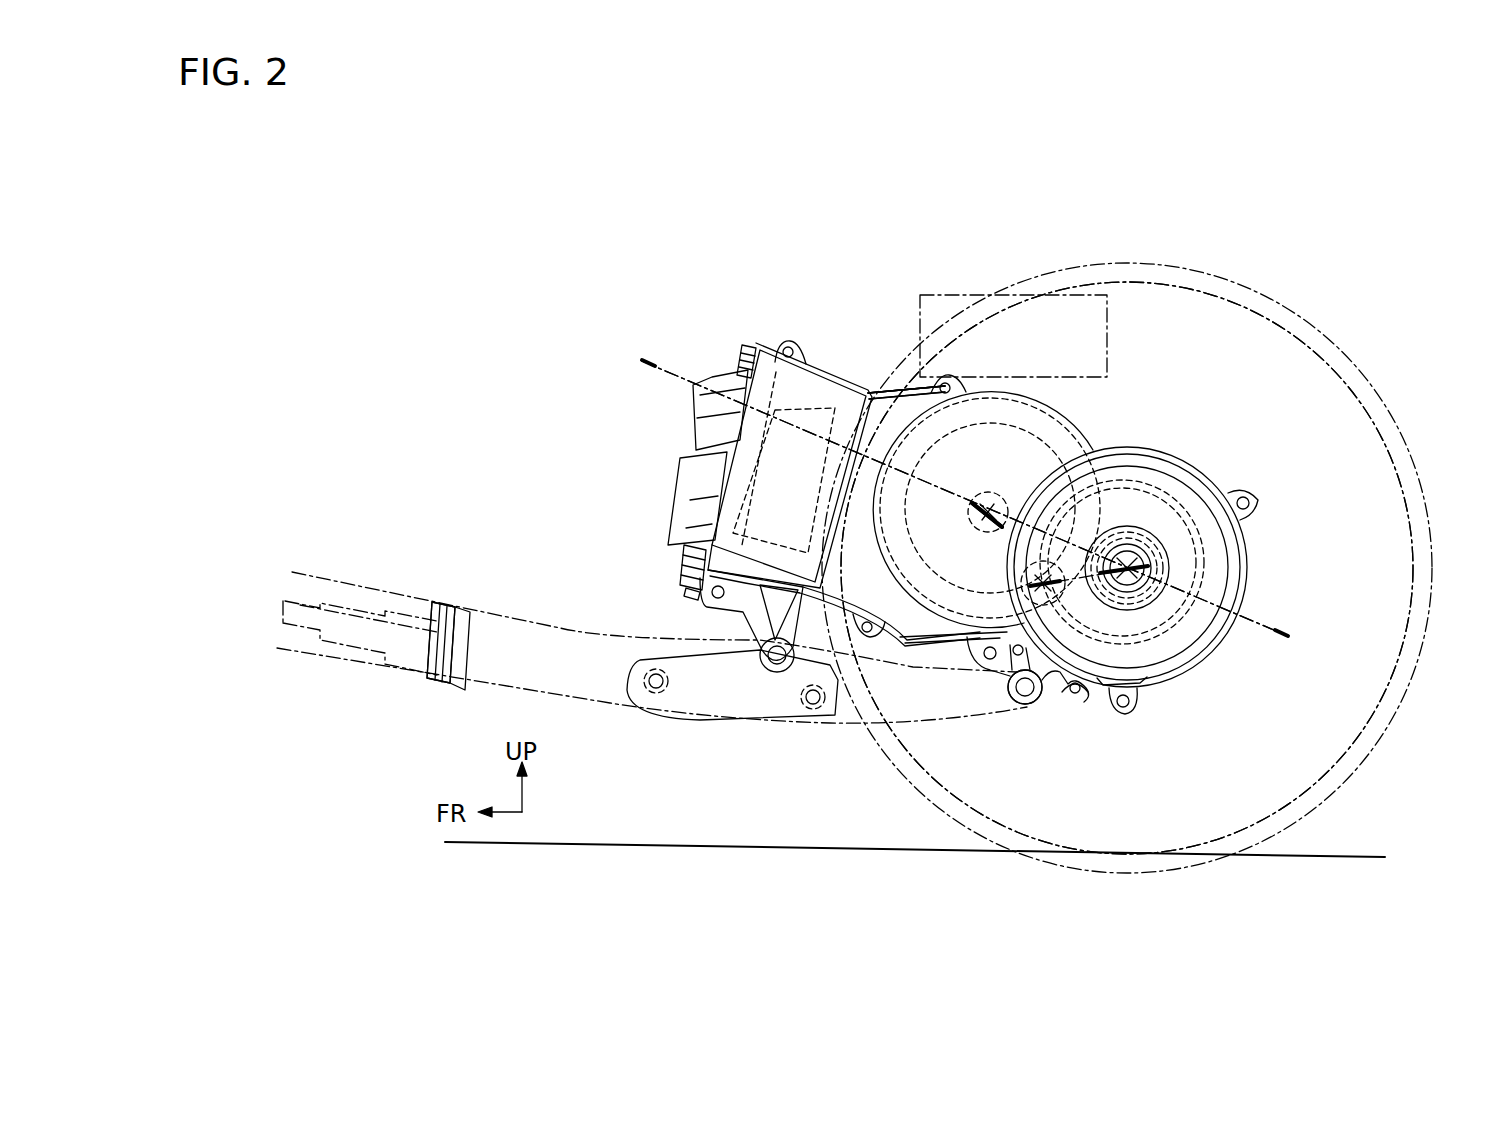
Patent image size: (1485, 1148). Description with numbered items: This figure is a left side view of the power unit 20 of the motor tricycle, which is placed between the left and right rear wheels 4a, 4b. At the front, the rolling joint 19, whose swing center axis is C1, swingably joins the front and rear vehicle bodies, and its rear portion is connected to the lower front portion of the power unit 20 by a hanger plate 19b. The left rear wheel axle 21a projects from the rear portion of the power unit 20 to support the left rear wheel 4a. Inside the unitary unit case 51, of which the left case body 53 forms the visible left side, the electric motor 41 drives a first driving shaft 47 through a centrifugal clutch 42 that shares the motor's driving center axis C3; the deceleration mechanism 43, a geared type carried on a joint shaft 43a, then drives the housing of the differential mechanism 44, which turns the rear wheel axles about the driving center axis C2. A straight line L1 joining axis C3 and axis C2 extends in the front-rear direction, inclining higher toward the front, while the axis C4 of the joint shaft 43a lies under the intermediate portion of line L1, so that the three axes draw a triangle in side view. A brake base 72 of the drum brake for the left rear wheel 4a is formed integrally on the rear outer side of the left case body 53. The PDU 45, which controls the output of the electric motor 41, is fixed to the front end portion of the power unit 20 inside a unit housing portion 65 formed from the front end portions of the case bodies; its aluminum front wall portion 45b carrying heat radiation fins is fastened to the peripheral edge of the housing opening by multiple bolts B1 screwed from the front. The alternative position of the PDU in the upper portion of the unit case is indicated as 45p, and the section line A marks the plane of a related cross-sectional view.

The left rear wheel 4a is at (1312, 360).
The right rear wheel 4b is at (1127, 568).
The rolling joint 19 is at (540, 637).
The hanger plate 19b is at (843, 730).
The power unit 20 is at (865, 313).
The left rear wheel axle 21a is at (1128, 572).
The electric motor 41 is at (1010, 392).
The centrifugal clutch 42 is at (1052, 422).
The deceleration mechanism 43 is at (1025, 687).
The joint shaft 43a is at (1045, 700).
The differential mechanism 44 is at (1140, 482).
The PDU (Power Drive Unit) 45 is at (782, 377).
The PDU as placed in the upper portion of the unit case 45p is at (965, 295).
The front wall portion 45b is at (700, 432).
The first driving shaft 47 is at (975, 496).
The unit case 51 is at (906, 389).
The left case body 53 is at (900, 405).
The unit housing portion 65 is at (830, 372).
The brake base 72 is at (1182, 486).
The section line A is at (651, 363).
The bolts B1 is at (744, 352).
The swing center axis C1 is at (455, 648).
The driving center axis C2 is at (1178, 618).
The driving center axis C3 is at (988, 498).
The axis of the joint shaft C4 is at (1055, 605).
The straight line L1 is at (1053, 530).